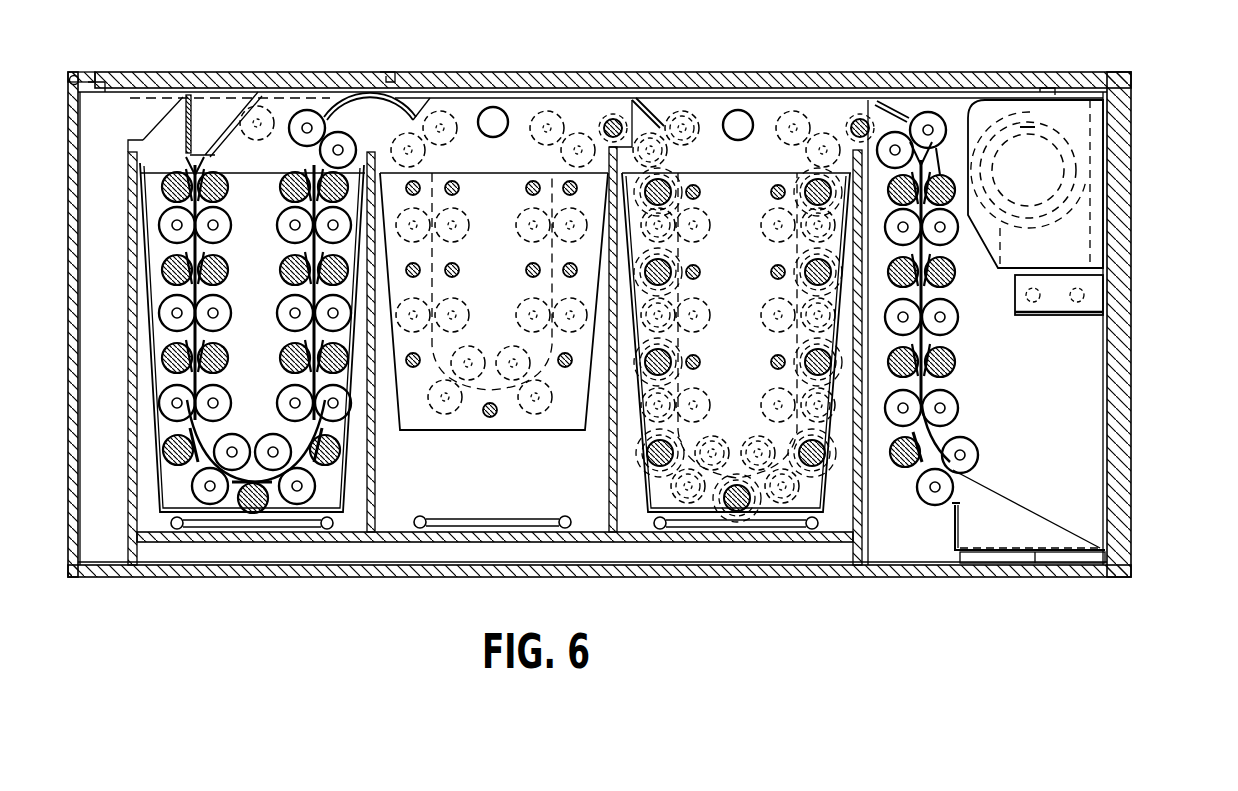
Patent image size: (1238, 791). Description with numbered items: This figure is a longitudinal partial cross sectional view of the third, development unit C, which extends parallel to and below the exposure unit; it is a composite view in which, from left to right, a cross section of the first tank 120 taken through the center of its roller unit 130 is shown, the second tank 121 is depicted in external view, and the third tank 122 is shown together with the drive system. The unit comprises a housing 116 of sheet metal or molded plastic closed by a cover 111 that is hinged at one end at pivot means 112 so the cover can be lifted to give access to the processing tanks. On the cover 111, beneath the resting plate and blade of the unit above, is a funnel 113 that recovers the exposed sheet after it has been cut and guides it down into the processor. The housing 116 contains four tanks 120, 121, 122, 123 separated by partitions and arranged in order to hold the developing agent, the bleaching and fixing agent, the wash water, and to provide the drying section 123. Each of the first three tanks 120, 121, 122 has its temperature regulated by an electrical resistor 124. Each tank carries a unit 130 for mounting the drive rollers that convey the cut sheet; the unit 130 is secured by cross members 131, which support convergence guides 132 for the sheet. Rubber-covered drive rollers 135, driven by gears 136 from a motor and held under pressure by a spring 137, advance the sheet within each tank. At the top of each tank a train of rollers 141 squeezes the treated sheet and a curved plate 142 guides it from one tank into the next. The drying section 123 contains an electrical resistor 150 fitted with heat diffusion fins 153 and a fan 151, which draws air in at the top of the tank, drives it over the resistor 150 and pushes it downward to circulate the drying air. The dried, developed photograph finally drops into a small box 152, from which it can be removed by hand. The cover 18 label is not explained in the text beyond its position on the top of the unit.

The cover 111 is at (572, 90).
The top cover 18 is at (236, 80).
The pivot means 112 is at (72, 76).
The funnel 113 is at (197, 155).
The train of rollers 141 is at (307, 128).
The curved plate 142 is at (400, 125).
The tank 120 is at (247, 338).
The tank 121 is at (548, 432).
The tank 122 is at (709, 345).
The drying section 123 is at (1092, 440).
The electrical resistor 124 is at (465, 518).
The housing 116 is at (400, 545).
The cross members 131 is at (165, 270).
The drive rollers 135 is at (172, 313).
The convergence guides 132 is at (165, 358).
The unit 130 is at (240, 378).
The gears 136 is at (698, 324).
The spring 137 is at (810, 353).
The electrical resistor 150 is at (1095, 293).
The fan 151 is at (1012, 100).
The small box 152 is at (955, 530).
The heat diffusion fins 153 is at (1025, 312).
The development unit C is at (692, 558).